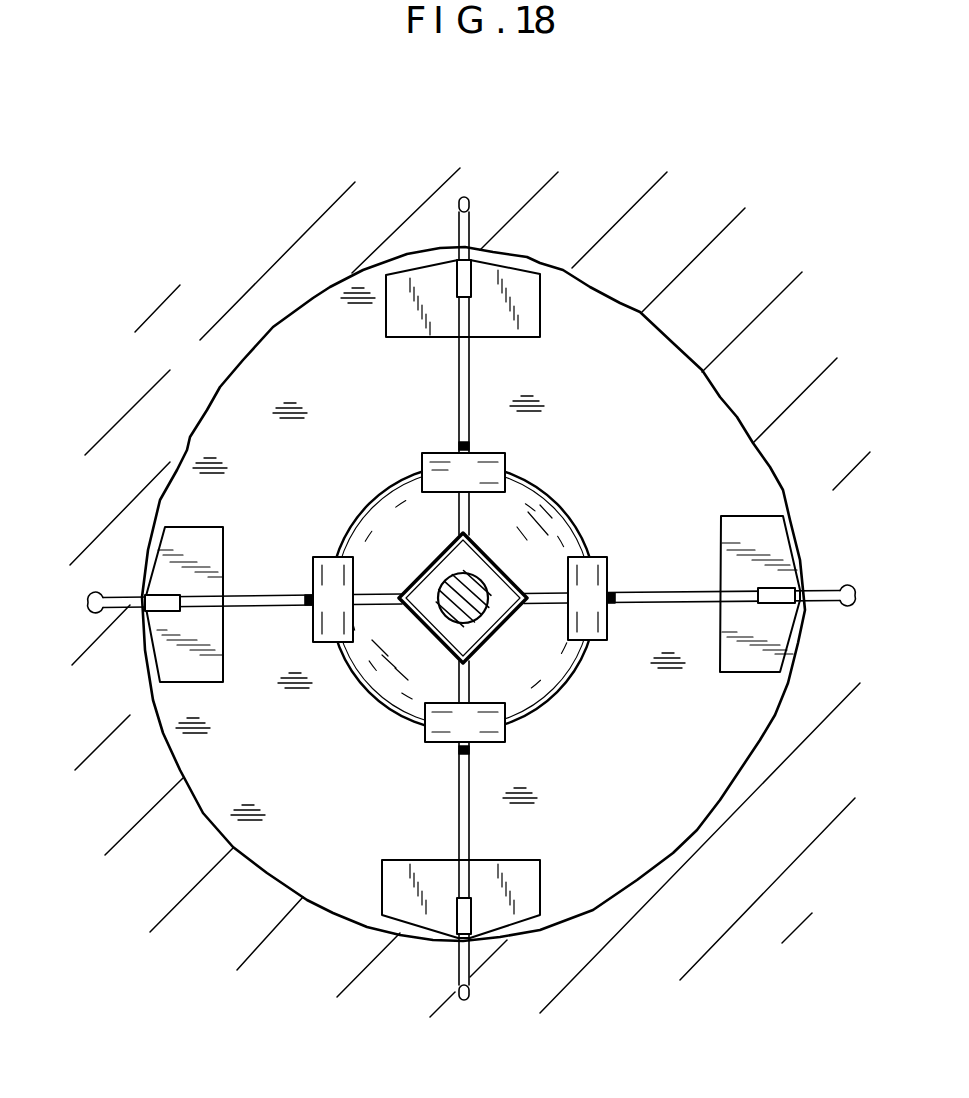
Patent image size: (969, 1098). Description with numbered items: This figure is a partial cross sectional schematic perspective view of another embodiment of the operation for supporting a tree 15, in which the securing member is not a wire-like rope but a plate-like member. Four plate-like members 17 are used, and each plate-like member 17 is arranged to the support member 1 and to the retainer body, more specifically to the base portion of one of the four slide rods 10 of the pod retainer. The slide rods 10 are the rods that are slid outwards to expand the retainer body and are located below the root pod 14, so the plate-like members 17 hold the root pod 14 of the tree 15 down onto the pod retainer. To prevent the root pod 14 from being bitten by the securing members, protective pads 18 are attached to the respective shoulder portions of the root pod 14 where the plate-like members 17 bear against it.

The support member 1 is at (500, 563).
The slide rod 10 is at (459, 820).
The root pod 14 is at (372, 670).
The tree 15 is at (487, 607).
The plate-like member 17 is at (387, 597).
The protective pad 18 is at (423, 454).